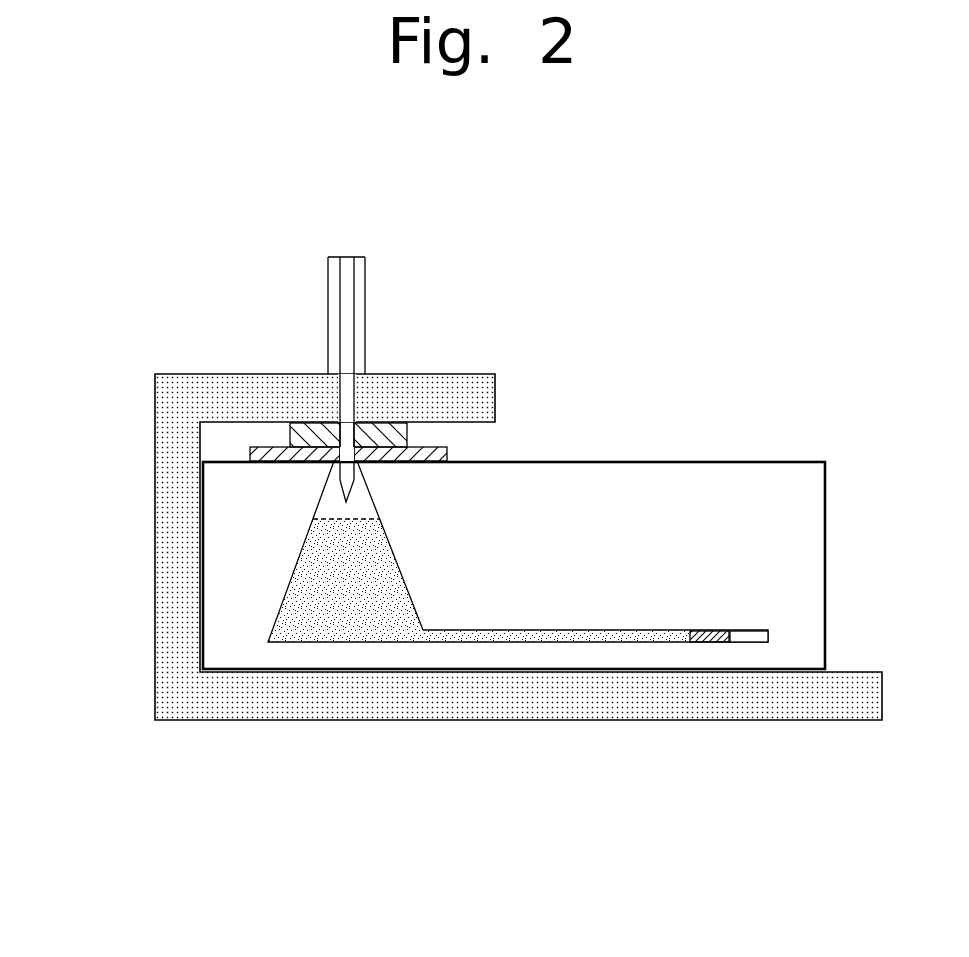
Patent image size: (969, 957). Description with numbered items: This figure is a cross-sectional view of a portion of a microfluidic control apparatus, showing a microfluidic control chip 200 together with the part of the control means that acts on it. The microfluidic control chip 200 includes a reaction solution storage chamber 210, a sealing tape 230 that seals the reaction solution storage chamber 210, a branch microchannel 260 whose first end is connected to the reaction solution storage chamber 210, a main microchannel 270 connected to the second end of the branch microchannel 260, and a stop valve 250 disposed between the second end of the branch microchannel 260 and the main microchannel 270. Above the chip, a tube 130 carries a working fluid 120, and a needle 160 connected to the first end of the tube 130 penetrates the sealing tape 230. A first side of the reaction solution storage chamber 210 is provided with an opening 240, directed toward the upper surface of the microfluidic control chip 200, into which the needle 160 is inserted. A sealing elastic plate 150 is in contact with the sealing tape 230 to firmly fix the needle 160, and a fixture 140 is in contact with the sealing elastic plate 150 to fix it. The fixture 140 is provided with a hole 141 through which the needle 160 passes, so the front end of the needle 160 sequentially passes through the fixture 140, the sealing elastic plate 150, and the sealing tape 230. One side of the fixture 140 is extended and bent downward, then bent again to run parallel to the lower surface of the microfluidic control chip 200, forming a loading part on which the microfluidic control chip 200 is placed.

The working fluid 120 is at (347, 265).
The tube 130 is at (362, 305).
The fixture 140 is at (165, 562).
The hole 141 is at (338, 397).
The sealing elastic plate 150 is at (298, 428).
The needle 160 is at (352, 400).
The microfluidic control chip 200 is at (772, 460).
The reaction solution storage chamber 210 is at (403, 575).
The sealing tape 230 is at (246, 452).
The opening 240 is at (360, 460).
The stop valve 250 is at (707, 630).
The branch microchannel 260 is at (542, 635).
The main microchannel 270 is at (748, 632).